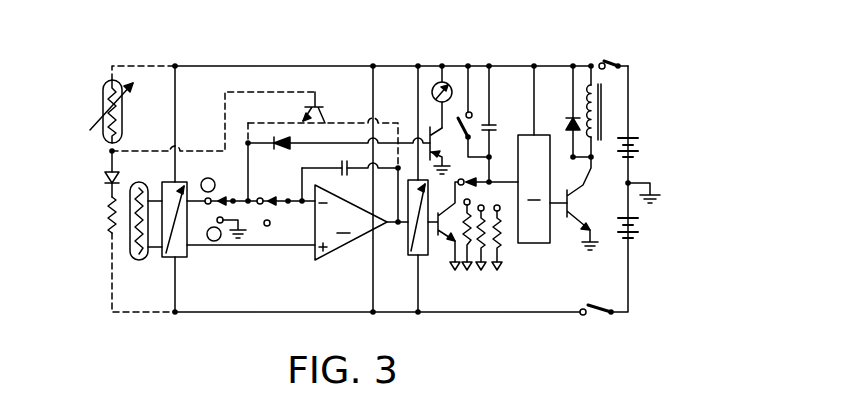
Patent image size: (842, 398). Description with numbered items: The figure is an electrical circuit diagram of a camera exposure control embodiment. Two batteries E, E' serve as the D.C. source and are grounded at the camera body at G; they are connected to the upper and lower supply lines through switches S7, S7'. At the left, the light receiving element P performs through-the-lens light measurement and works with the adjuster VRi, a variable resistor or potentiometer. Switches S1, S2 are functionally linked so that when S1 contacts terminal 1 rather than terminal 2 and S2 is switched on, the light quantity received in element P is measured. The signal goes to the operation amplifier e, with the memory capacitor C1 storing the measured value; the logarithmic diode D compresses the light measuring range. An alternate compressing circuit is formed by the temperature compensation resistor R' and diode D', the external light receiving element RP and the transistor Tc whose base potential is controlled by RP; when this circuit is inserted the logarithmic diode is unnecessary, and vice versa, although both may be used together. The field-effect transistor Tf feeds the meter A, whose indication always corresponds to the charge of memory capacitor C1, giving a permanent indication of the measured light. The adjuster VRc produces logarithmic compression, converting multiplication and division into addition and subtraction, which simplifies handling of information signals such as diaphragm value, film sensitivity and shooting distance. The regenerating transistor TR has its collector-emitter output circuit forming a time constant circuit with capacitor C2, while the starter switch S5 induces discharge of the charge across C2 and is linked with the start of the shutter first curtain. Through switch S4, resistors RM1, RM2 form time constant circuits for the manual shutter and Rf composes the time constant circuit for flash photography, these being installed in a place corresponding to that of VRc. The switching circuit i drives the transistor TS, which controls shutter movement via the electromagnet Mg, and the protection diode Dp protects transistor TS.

The external light receiving element RP is at (101, 111).
The diode for temperature compensation D' is at (99, 176).
The resistor for temperature compensation R' is at (98, 217).
The light receiving element P is at (139, 233).
The adjuster VRi is at (183, 230).
The switch S1 is at (209, 213).
The terminal 1 is at (208, 185).
The terminal 2 is at (226, 229).
The switch S2 is at (277, 216).
The transistor Tc is at (320, 104).
The logarithmic diode D is at (282, 155).
The memory capacitor C1 is at (355, 179).
The operation amplifier e is at (351, 222).
The adjuster VRc is at (407, 230).
The regenerating transistor TR is at (447, 226).
The meter A is at (448, 87).
The field-effect transistor Tf is at (444, 150).
The starter switch S5 is at (475, 131).
The capacitor C2 is at (500, 129).
The switch S4 is at (485, 193).
The resistor RM1 is at (473, 248).
The resistor RM2 is at (499, 252).
The resistor Rf is at (508, 242).
The switching circuit i is at (542, 189).
The protection diode Dp is at (563, 115).
The electromagnet Mg is at (609, 112).
The switch S7 is at (613, 54).
The battery E is at (635, 146).
The ground G is at (649, 192).
The battery E' is at (636, 232).
The transistor TS is at (586, 203).
The switch S7' is at (599, 322).